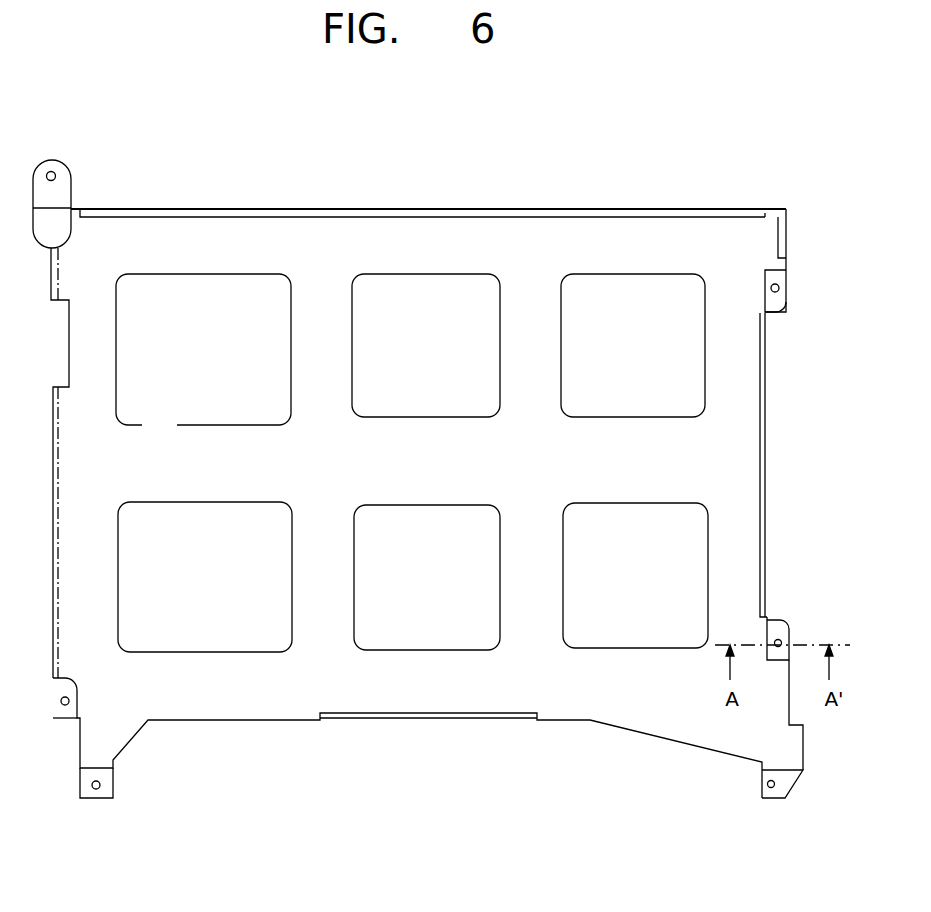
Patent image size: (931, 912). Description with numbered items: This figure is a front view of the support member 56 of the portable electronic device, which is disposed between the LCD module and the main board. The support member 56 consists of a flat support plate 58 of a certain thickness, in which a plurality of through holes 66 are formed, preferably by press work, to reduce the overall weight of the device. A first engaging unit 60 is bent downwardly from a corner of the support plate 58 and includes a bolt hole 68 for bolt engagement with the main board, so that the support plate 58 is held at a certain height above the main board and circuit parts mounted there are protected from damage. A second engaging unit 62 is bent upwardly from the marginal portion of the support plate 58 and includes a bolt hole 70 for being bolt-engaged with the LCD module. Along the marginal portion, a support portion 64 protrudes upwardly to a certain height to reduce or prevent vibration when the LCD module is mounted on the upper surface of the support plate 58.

The support member 56 is at (580, 180).
The support plate 58 is at (410, 228).
The through holes 66 is at (188, 290).
The support portion 64 is at (767, 460).
The second engaging unit 62 is at (790, 633).
The bolt hole 70 is at (780, 640).
The first engaging unit 60 is at (796, 786).
The bolt hole 68 is at (768, 795).